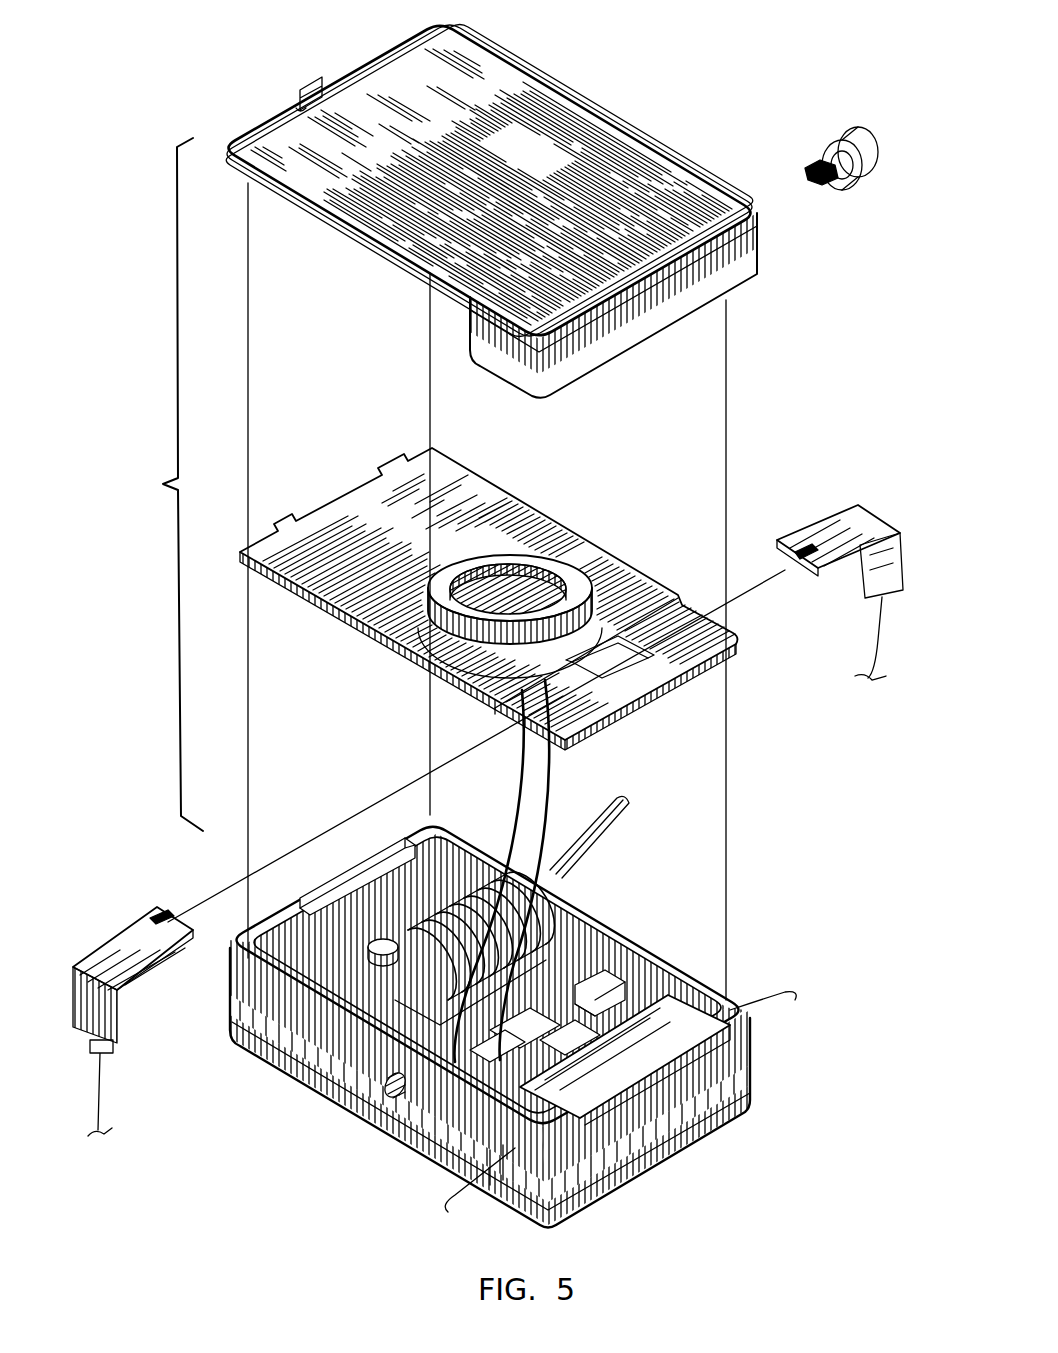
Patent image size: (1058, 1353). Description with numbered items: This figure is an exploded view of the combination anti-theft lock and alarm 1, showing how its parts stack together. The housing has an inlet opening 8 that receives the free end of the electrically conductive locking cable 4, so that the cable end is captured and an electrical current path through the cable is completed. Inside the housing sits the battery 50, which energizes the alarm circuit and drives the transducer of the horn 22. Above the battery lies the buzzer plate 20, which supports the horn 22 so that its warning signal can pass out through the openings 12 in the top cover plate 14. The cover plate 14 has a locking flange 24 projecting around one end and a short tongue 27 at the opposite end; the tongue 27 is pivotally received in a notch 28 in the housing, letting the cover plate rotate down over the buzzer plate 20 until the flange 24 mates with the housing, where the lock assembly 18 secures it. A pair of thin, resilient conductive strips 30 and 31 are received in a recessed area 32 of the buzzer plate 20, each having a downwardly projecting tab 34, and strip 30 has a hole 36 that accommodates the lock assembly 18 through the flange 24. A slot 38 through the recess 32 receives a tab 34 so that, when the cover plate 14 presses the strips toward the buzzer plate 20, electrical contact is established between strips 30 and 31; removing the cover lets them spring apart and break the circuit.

The combination anti-theft lock and alarm 1 is at (170, 484).
The locking cable 4 is at (600, 848).
The inlet opening 8 is at (372, 1088).
The openings 12 is at (489, 175).
The top cover plate 14 is at (480, 70).
The lock assembly 18 is at (873, 195).
The buzzer plate 20 is at (488, 604).
The horn 22 is at (530, 597).
The locking flange 24 is at (668, 315).
The tongue 27 is at (298, 88).
The notch 28 is at (346, 888).
The conductive strip 30 is at (843, 563).
The conductive strip 31 is at (122, 950).
The recessed area 32 is at (685, 625).
The tab 34 is at (793, 578).
The hole 36 is at (888, 555).
The slot 38 is at (615, 668).
The battery 50 is at (685, 1028).